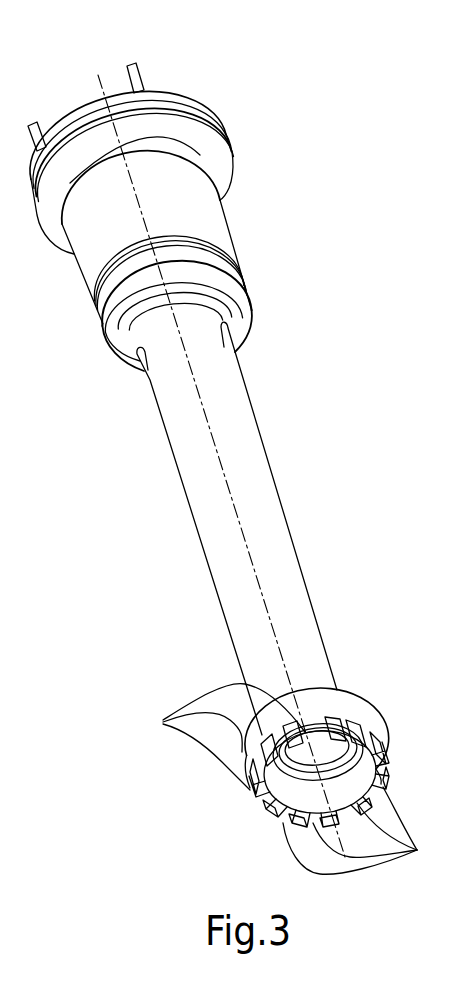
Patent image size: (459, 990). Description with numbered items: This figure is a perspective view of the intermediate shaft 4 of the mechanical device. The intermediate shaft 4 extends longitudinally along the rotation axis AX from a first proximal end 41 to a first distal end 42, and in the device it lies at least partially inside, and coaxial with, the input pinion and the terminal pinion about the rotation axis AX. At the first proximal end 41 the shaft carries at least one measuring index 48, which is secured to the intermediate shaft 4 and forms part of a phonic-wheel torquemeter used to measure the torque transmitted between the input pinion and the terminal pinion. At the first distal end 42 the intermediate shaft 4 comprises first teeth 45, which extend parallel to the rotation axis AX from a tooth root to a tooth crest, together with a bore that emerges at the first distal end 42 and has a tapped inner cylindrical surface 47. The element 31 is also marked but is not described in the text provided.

The intermediate shaft 4 is at (323, 154).
The first proximal end 41 is at (215, 69).
The measuring index 48 is at (133, 65).
The housing element 31 is at (447, 361).
The rotation axis AX is at (222, 468).
The first distal end 42 is at (191, 812).
The tapped inner cylindrical surface 47 is at (331, 758).
The first teeth 45 is at (163, 722).